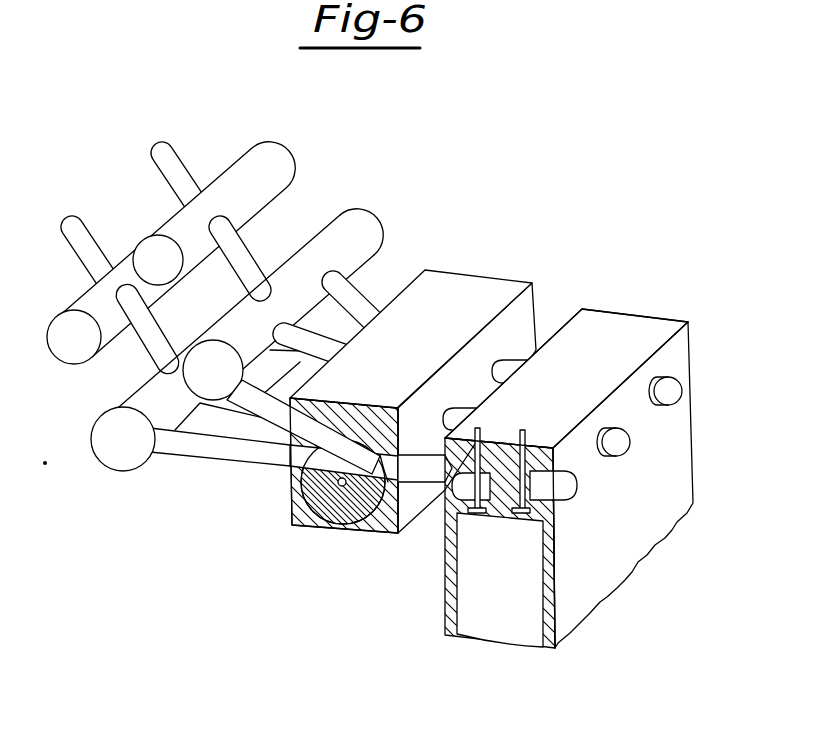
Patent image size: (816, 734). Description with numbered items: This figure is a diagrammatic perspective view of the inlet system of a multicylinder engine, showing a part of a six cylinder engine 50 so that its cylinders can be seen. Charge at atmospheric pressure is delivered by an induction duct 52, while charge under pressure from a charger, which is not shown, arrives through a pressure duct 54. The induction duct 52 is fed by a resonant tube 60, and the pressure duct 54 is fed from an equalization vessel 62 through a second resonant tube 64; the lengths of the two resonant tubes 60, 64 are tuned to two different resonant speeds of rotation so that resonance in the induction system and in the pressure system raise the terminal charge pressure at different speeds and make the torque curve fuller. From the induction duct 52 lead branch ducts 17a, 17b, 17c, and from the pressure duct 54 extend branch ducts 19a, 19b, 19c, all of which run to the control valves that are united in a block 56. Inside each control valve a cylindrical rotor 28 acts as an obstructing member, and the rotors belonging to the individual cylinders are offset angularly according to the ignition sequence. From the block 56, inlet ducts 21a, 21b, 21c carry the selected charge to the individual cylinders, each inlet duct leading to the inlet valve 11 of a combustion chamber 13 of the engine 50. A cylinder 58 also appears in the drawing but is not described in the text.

The inlet valve 11 is at (480, 517).
The combustion chamber 13 is at (492, 607).
The branch duct 17a is at (258, 458).
The branch duct 17b is at (300, 328).
The branch duct 17c is at (368, 298).
The branch duct 19a is at (193, 455).
The branch duct 19b is at (283, 377).
The branch duct 19c is at (340, 353).
The inlet duct 21a is at (423, 472).
The inlet duct 21b is at (450, 423).
The inlet duct 21c is at (500, 368).
The rotor 28 is at (343, 503).
The six cylinder engine 50 is at (561, 500).
The induction duct 52 is at (358, 227).
The pressure duct 54 is at (118, 440).
The block 56 is at (382, 403).
The cylinder 58 is at (265, 167).
The resonant tube 60 is at (240, 258).
The equalization vessel 62 is at (83, 330).
The resonant tube 64 is at (147, 330).